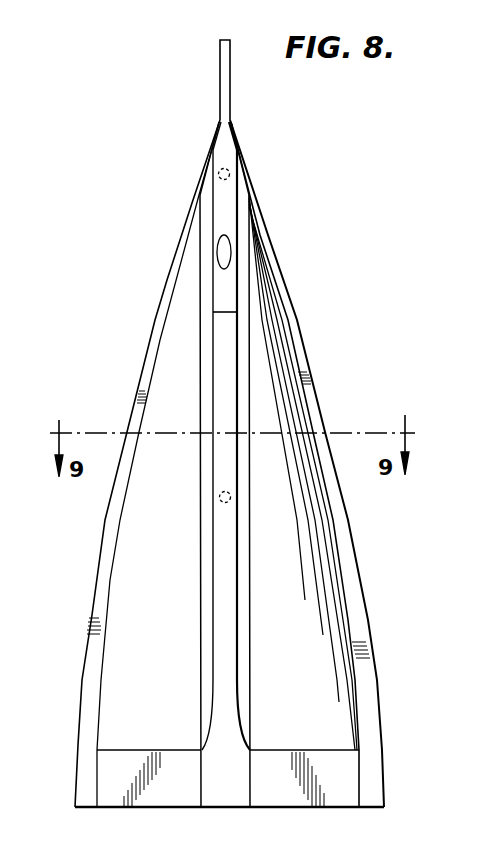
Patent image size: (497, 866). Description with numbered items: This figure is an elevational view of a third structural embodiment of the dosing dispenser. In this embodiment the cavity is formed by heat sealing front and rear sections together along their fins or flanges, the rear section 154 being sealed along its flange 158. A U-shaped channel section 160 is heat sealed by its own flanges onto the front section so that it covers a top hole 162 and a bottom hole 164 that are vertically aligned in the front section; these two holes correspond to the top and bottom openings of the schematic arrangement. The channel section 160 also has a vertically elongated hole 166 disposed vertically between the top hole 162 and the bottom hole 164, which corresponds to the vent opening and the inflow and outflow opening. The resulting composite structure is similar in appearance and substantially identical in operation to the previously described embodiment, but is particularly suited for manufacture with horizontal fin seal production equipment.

The rear section 154 is at (121, 590).
The flange 158 is at (87, 668).
The U-shaped channel section 160 is at (237, 380).
The top hole 162 is at (212, 152).
The bottom hole 164 is at (218, 508).
The vertically elongated hole 166 is at (233, 262).